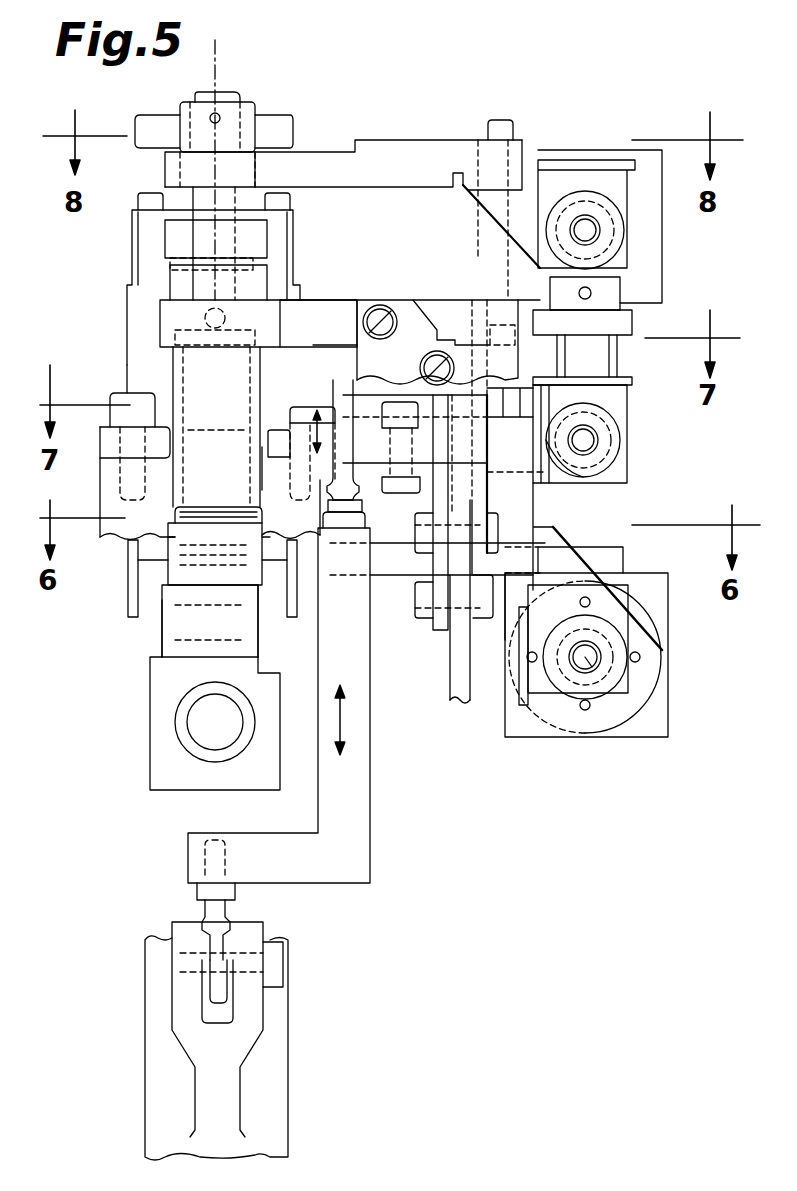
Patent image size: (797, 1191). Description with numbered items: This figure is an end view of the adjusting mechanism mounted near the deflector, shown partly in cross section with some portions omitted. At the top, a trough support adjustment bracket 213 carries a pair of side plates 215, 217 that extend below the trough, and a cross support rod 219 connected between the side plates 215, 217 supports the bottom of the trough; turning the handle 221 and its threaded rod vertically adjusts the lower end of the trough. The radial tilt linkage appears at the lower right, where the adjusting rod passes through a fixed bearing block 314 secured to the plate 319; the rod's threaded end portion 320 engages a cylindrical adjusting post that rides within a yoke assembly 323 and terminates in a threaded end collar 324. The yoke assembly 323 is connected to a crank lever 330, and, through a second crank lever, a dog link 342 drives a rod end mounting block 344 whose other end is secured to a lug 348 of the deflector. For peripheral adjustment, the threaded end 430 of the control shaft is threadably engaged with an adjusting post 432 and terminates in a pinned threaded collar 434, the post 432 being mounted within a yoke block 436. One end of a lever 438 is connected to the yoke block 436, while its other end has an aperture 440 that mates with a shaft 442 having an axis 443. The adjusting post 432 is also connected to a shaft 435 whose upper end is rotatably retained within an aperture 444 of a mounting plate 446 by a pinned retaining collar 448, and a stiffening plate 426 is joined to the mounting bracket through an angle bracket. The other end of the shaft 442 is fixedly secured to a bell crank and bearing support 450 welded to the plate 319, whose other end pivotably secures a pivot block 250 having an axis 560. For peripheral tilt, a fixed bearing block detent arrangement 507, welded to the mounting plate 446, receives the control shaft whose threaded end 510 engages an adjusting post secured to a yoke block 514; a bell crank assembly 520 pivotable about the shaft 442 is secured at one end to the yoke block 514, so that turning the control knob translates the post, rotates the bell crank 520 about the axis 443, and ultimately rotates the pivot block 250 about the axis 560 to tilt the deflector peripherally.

The axis 443 is at (222, 44).
The handle 221 is at (282, 122).
The bell crank assembly 520 is at (420, 140).
The yoke block 514 is at (490, 203).
The fixed bearing block detent arrangement 507 is at (622, 148).
The threaded end 510 is at (590, 235).
The trough support adjustment bracket 213 is at (132, 250).
The aperture 440 is at (160, 310).
The shaft 442 is at (205, 372).
The stiffening plate 426 is at (107, 435).
The lever 438 is at (335, 298).
The pinned retaining collar 448 is at (630, 295).
The mounting plate 446 is at (628, 320).
The aperture 444 is at (620, 342).
The shaft 435 is at (632, 378).
The yoke block 436 is at (623, 425).
The adjusting post 432 is at (610, 448).
The threaded end 430 is at (590, 440).
The pinned threaded collar 434 is at (620, 470).
The crank lever 330 is at (535, 510).
The plate 319 is at (632, 546).
The bell crank and bearing support 450 is at (160, 540).
The side plate 215 is at (132, 600).
The side plate 217 is at (292, 620).
The cross support rod 219 is at (175, 610).
The pivot block 250 is at (160, 770).
The axis 560 is at (208, 723).
The dog link 342 is at (355, 772).
The rod end mounting block 344 is at (230, 900).
The lug 348 is at (255, 1015).
The fixed bearing block 314 is at (670, 693).
The yoke assembly 323 is at (668, 590).
The threaded end collar 324 is at (622, 690).
The threaded end portion 320 is at (592, 662).